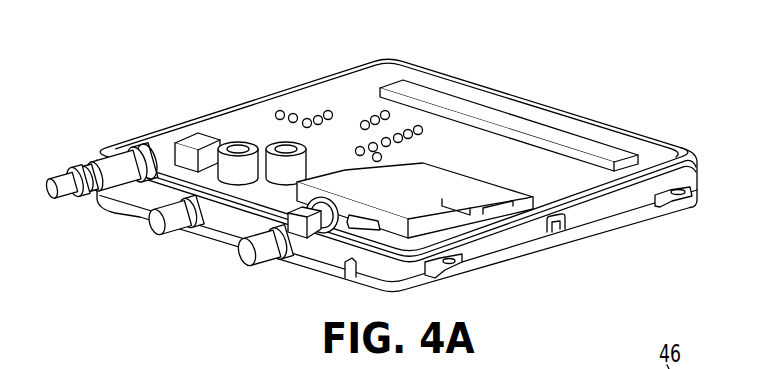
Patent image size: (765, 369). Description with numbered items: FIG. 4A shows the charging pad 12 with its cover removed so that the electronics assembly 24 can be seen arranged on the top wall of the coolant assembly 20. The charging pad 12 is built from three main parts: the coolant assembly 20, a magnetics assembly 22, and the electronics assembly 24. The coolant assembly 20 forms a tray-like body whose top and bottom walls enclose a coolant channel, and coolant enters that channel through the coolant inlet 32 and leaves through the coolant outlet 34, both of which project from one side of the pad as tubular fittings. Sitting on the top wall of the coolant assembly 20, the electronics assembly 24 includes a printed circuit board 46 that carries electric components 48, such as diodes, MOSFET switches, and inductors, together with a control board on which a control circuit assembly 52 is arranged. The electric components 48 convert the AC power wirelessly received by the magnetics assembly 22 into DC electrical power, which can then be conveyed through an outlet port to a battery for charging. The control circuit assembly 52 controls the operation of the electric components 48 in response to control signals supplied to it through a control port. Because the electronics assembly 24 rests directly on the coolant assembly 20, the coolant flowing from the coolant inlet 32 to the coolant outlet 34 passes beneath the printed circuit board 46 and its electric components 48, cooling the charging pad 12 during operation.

The charging pad 12 is at (586, 66).
The coolant assembly 20 is at (220, 229).
The magnetics assembly 22 is at (548, 259).
The electronics assembly 24 is at (256, 93).
The coolant inlet 32 is at (150, 228).
The coolant outlet 34 is at (243, 258).
The printed circuit board 46 is at (352, 90).
The electric components 48 is at (214, 137).
The control circuit assembly 52 is at (390, 198).